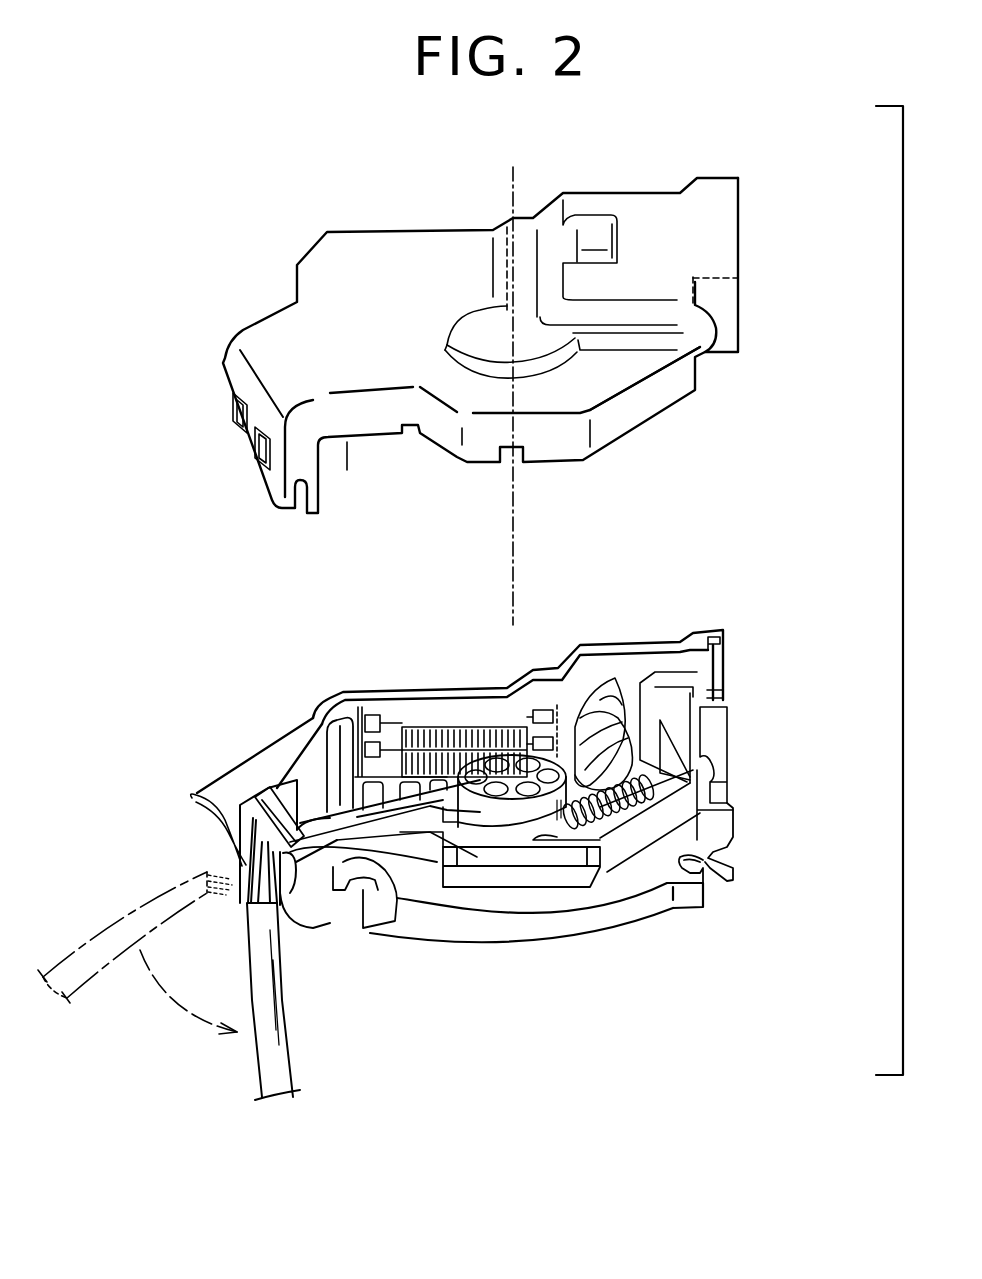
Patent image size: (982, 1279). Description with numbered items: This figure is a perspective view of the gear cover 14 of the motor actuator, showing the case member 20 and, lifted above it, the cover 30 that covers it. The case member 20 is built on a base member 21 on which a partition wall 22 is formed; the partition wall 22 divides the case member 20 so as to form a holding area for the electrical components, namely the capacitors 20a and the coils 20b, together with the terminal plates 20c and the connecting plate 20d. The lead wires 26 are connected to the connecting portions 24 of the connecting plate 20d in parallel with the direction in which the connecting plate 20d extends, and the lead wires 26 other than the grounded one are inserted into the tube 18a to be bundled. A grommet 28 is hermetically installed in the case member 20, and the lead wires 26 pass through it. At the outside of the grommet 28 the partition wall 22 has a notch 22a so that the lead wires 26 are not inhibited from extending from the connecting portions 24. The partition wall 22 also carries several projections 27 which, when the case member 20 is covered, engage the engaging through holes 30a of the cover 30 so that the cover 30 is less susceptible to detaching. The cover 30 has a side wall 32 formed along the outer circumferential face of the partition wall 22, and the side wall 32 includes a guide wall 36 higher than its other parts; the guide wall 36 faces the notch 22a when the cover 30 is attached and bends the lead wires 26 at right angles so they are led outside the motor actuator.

The gear cover 14 is at (595, 922).
The tube 18a is at (277, 1007).
The case member 20 is at (653, 657).
The capacitors 20a is at (600, 730).
The coils 20b is at (420, 755).
The terminal plates 20c is at (700, 690).
The connecting plate 20d is at (337, 747).
The base member 21 is at (643, 880).
The partition wall 22 is at (427, 703).
The notch 22a is at (250, 793).
The connecting portions 24 is at (310, 800).
The lead wires 26 is at (343, 882).
The projections 27 is at (243, 867).
The grommet 28 is at (258, 795).
The cover 30 is at (674, 424).
The engaging through holes 30a is at (241, 433).
The side wall 32 is at (613, 428).
The guide wall 36 is at (235, 447).